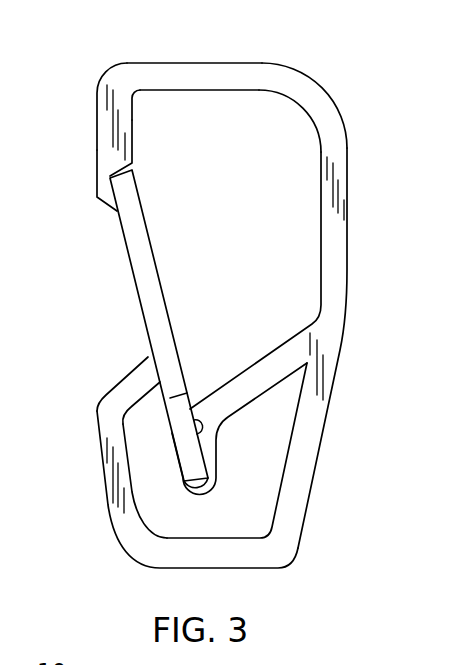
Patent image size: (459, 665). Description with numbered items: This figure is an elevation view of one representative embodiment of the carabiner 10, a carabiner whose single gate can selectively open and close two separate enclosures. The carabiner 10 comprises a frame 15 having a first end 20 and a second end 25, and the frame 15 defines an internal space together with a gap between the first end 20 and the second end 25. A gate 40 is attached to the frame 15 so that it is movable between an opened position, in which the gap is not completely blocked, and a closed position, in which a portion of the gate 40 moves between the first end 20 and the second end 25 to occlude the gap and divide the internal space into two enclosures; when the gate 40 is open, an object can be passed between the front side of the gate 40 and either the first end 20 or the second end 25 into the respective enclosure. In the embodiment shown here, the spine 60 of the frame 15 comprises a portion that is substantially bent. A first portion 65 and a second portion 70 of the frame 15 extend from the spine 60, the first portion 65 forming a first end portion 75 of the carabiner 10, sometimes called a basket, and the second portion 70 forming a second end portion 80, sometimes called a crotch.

The carabiner 10 is at (108, 50).
The frame 15 is at (340, 88).
The first end 20 is at (105, 215).
The second end 25 is at (140, 350).
The gate 40 is at (152, 281).
The spine 60 is at (333, 300).
The first portion 65 is at (210, 72).
The second portion 70 is at (148, 552).
The first end portion 75 is at (214, 100).
The second end portion 80 is at (225, 528).